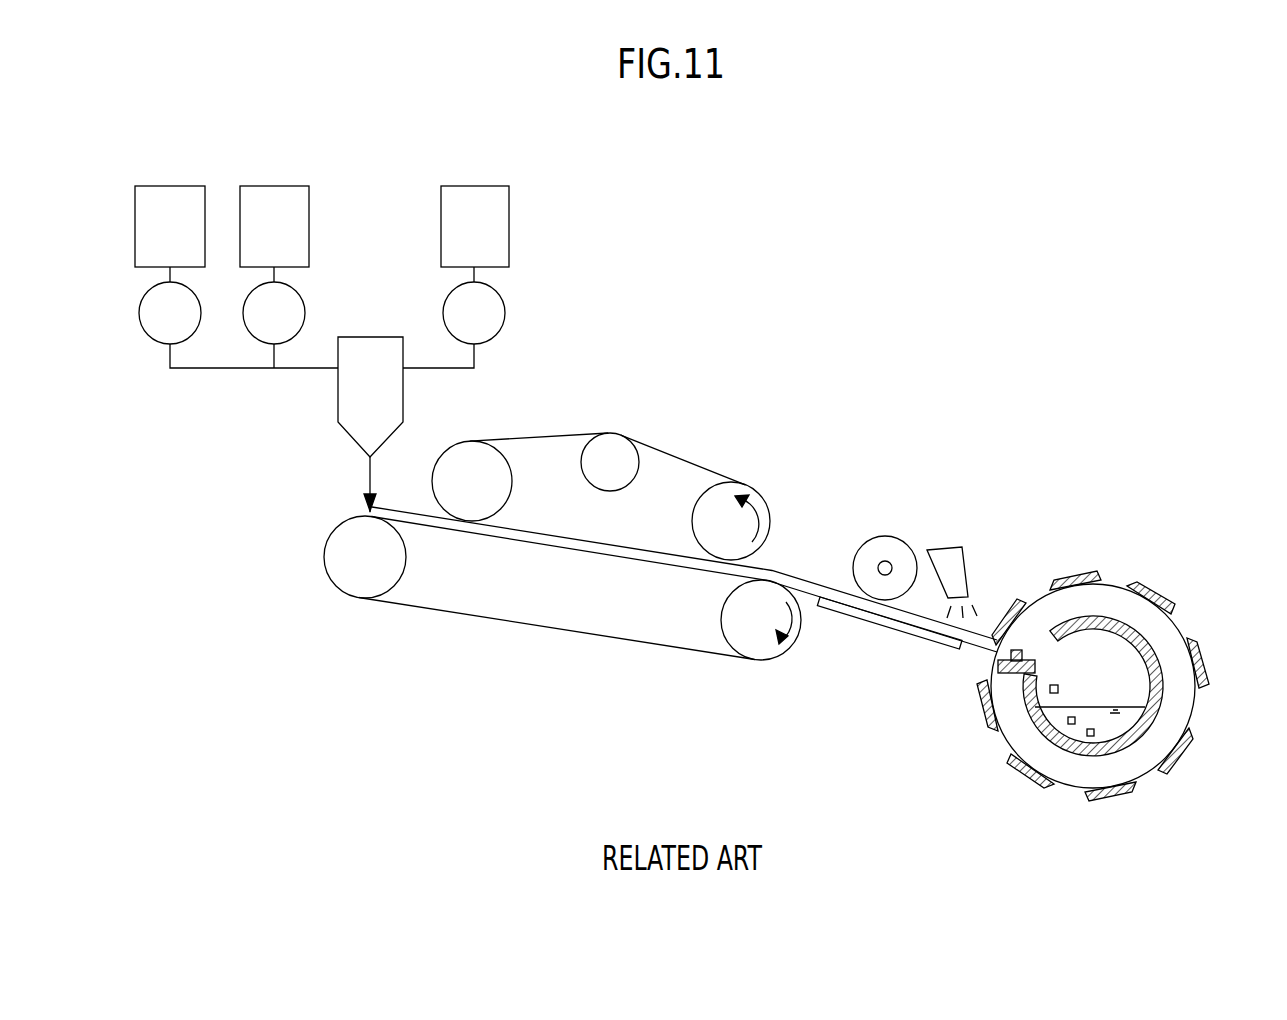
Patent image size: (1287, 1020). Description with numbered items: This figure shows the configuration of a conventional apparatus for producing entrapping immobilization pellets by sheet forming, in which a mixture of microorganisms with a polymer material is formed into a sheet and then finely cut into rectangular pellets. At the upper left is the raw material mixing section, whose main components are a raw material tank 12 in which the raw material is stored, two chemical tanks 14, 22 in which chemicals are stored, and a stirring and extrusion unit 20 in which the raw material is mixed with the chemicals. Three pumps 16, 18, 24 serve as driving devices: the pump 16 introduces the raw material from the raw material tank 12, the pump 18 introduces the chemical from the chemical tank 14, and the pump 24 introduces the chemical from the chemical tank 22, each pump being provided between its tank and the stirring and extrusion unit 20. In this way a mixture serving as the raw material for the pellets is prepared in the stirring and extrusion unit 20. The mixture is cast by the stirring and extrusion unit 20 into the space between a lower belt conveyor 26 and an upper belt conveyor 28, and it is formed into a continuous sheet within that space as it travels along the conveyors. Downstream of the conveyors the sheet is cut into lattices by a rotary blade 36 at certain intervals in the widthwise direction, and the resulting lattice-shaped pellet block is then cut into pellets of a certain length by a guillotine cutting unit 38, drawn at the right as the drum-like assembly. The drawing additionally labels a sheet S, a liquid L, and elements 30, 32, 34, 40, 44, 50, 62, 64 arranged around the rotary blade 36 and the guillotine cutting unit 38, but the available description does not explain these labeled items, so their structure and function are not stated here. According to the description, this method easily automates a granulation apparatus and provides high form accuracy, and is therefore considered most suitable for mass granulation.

The raw material tank 12 is at (172, 196).
The chemical tank 14 is at (275, 196).
The chemical tank 22 is at (477, 196).
The pump 16 is at (139, 315).
The pump 18 is at (305, 313).
The pump 24 is at (505, 313).
The stirring and extrusion unit 20 is at (338, 400).
The belt conveyor 26 is at (463, 614).
The belt conveyor 28 is at (687, 460).
The guide plate 30 is at (916, 633).
The conveying unit 32 is at (904, 524).
The roller shaft 34 is at (883, 576).
The rotary blade 36 is at (880, 538).
The guillotine cutting unit 38 is at (1123, 555).
The inner drum liner 40 is at (1150, 647).
The blades 44 is at (1195, 670).
The sheet forming apparatus 50 is at (821, 284).
The spray nozzle 62 is at (964, 565).
The sheet fragments 64 is at (1053, 683).
The sheet S is at (404, 505).
The liquid L is at (973, 647).